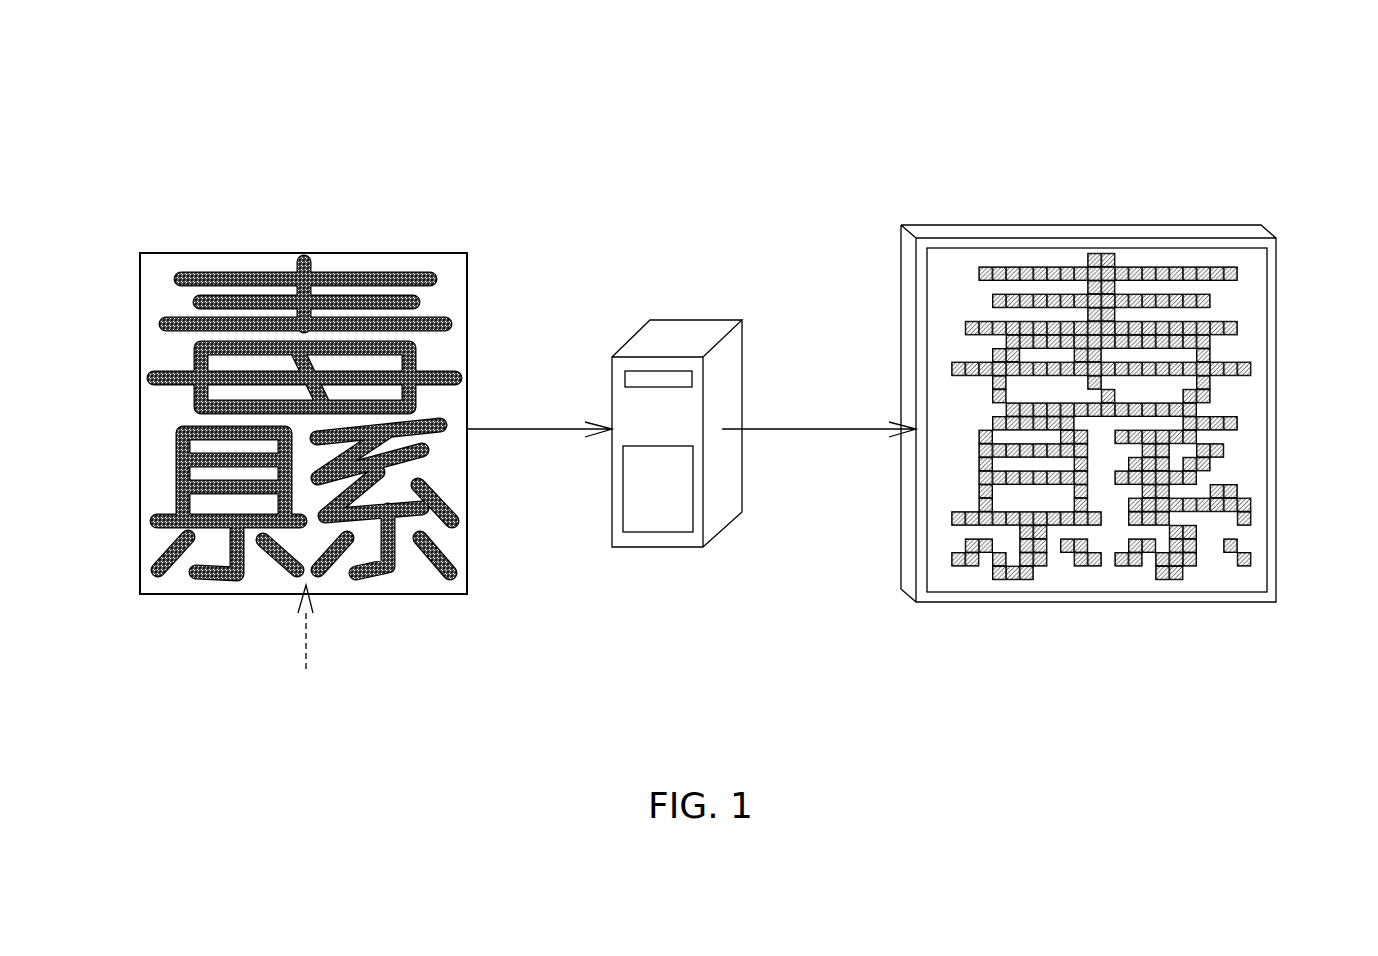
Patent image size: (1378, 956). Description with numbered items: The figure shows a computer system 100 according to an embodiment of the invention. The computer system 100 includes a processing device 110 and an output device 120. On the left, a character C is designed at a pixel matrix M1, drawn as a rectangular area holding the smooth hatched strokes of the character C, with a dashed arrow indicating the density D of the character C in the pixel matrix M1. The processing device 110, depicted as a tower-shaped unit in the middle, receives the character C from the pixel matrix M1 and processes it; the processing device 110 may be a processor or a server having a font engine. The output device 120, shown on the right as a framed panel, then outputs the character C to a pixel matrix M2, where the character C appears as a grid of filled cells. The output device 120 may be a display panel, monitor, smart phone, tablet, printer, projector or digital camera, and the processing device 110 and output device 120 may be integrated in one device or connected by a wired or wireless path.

The computer system 100 is at (1228, 134).
The processing device 110 is at (681, 336).
The output device 120 is at (1030, 232).
The pixel matrix M1 is at (158, 275).
The pixel matrix M2 is at (957, 267).
The character C is at (398, 277).
The density D is at (306, 645).